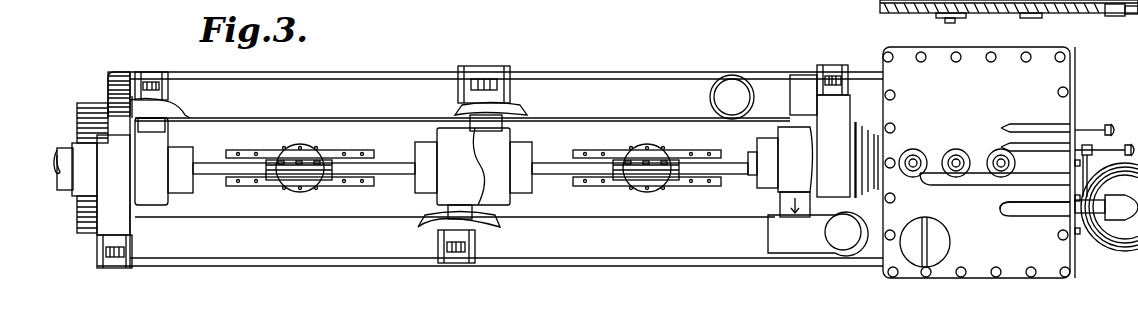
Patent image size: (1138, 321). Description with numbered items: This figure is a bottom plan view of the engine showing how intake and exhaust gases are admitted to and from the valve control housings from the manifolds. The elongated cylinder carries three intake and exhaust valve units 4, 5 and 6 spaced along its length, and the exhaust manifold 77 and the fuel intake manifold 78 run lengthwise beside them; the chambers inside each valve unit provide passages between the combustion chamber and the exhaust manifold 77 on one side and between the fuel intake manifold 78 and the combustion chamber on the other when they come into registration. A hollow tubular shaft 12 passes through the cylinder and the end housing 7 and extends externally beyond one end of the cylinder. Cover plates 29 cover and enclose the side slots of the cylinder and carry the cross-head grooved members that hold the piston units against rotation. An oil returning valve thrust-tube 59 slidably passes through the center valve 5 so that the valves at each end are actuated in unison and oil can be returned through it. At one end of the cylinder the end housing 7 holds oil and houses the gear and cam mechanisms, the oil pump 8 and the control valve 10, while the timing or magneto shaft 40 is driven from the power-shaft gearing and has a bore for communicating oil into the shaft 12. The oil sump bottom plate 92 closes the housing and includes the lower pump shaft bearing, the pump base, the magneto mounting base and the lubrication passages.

The intake and exhaust valve unit 4 is at (140, 200).
The center valve unit 5 is at (490, 190).
The valve housing 6 is at (755, 182).
The end housing 7 is at (890, 56).
The oil pump 8 is at (965, 18).
The control valve 10 is at (1028, 12).
The hollow tubular shaft 12 is at (60, 150).
The cover plate 29 is at (298, 192).
The timing or magneto shaft 40 is at (940, 20).
The oil returning valve thrust-tube 59 is at (390, 178).
The exhaust manifold 77 is at (226, 228).
The fuel intake manifold 78 is at (402, 88).
The oil sump bottom plate 92 is at (1035, 255).